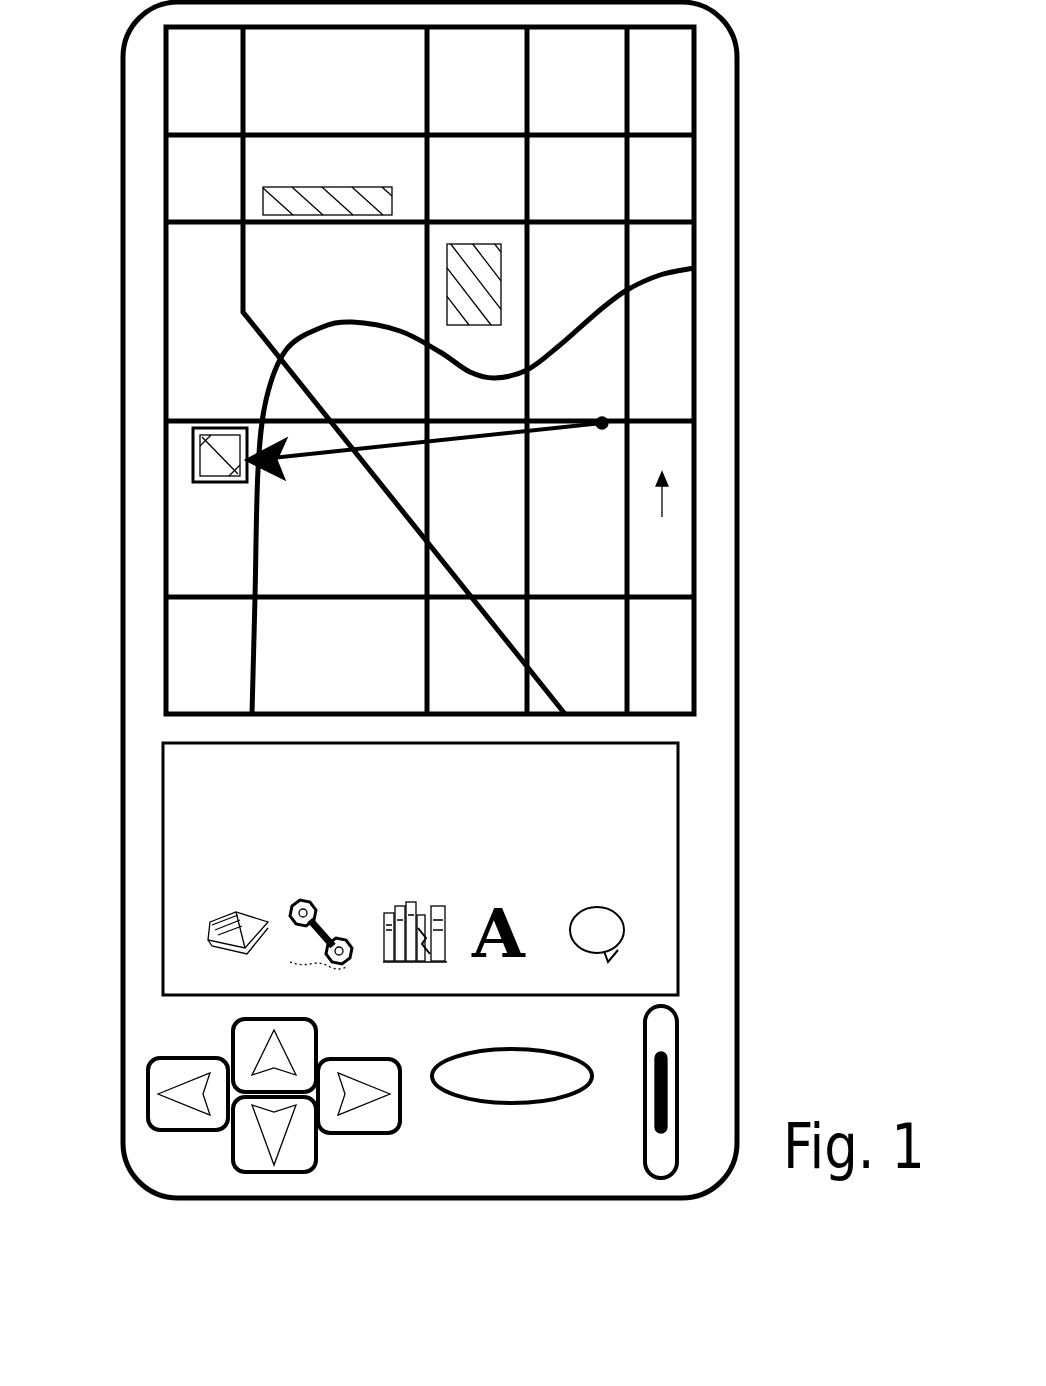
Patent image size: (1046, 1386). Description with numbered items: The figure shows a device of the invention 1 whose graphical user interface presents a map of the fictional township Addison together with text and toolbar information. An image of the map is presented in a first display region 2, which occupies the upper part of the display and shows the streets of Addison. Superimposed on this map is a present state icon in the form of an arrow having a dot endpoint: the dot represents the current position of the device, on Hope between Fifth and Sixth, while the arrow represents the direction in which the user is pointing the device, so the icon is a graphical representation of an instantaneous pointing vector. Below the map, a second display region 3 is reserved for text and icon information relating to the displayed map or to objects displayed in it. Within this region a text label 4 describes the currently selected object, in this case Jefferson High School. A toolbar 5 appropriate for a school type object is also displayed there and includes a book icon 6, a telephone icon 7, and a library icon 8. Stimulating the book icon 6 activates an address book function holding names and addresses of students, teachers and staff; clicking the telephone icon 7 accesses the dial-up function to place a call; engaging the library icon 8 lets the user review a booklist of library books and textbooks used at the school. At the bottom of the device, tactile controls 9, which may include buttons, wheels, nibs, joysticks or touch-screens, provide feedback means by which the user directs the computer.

The device of the invention 1 is at (718, 338).
The first display region 2 is at (180, 297).
The second display region 3 is at (182, 835).
The text label 4 is at (610, 785).
The toolbar 5 is at (617, 887).
The book icon 6 is at (245, 918).
The telephone icon 7 is at (298, 905).
The library icon 8 is at (425, 910).
The tactile controls 9 is at (657, 1032).